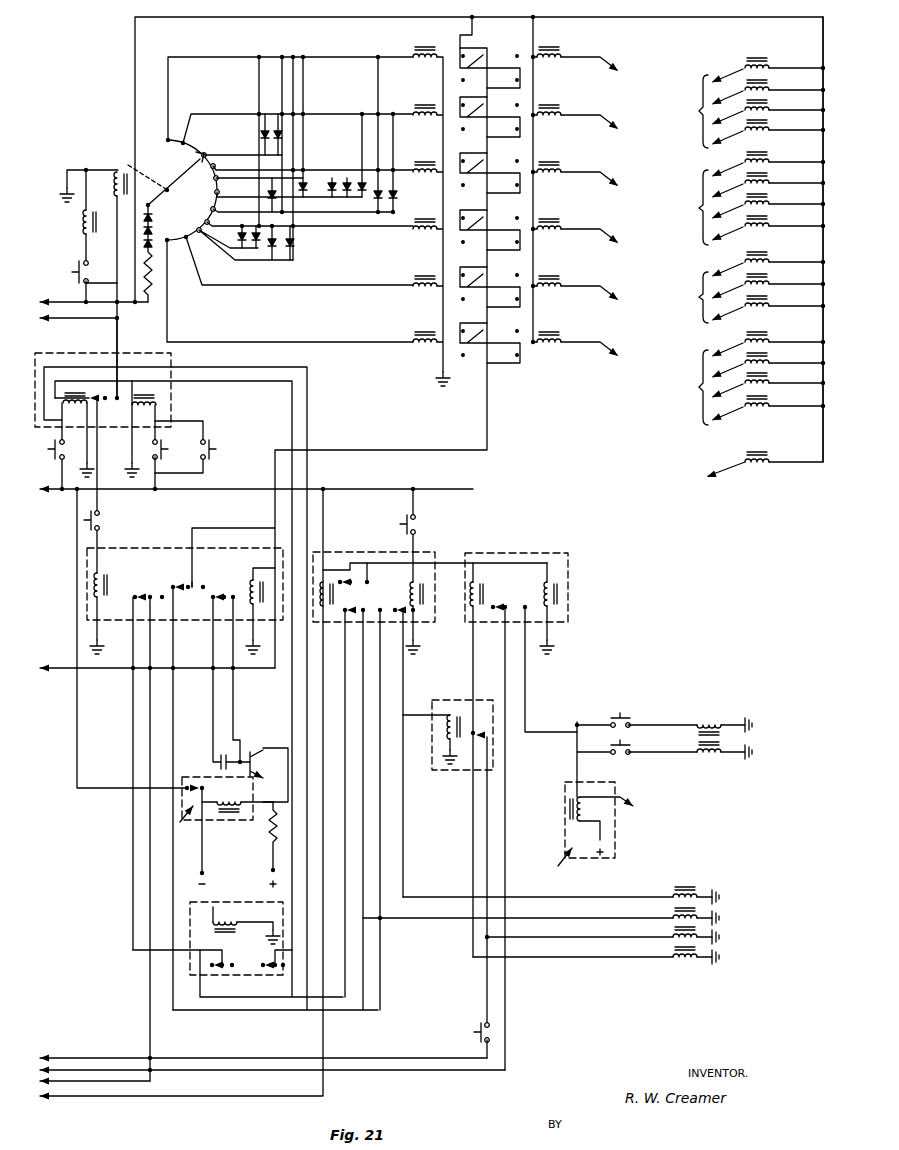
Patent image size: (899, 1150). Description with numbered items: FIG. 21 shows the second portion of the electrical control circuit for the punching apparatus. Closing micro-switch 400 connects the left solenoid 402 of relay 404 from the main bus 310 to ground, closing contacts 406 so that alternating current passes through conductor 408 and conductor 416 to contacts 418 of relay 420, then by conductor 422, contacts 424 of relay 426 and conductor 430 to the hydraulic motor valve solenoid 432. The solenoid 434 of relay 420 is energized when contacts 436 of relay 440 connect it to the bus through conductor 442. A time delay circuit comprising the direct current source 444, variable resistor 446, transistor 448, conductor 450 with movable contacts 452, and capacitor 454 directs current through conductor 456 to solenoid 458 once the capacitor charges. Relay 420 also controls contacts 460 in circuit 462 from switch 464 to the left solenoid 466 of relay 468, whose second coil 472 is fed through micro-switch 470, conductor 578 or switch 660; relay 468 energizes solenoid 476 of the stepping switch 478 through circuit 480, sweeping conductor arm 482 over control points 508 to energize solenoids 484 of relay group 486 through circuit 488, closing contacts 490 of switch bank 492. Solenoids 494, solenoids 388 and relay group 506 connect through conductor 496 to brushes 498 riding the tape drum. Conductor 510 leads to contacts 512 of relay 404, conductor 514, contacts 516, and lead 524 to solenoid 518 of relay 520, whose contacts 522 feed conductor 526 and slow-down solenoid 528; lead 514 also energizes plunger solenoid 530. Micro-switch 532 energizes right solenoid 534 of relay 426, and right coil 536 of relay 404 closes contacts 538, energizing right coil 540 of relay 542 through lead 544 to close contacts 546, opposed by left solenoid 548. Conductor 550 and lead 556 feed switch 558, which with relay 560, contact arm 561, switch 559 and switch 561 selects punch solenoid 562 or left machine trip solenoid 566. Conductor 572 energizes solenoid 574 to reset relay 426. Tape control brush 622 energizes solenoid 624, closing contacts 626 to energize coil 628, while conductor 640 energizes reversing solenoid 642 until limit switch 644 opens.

The main bus 310 is at (218, 490).
The solenoids 388 is at (770, 64).
The micro-switch 400 is at (102, 526).
The left solenoid of relay 404 402 is at (90, 593).
The relay 404 is at (169, 557).
The switch contacts 406 is at (146, 596).
The conductor 408 is at (148, 992).
The conductor 416 is at (132, 830).
The switch contacts 418 is at (230, 958).
The relay 420 is at (216, 910).
The conductor 422 is at (342, 996).
The switch contacts 424 is at (368, 608).
The relay 426 is at (354, 562).
The conductor 430 is at (408, 918).
The hydraulic motor valve solenoid 432 is at (672, 917).
The solenoid of relay 420 434 is at (240, 920).
The switch contacts 436 is at (199, 784).
The relay 440 is at (193, 823).
The conductor 442 is at (76, 752).
The direct current source 444 is at (206, 876).
The variable resistor 446 is at (268, 828).
The transistor 448 is at (251, 750).
The conductor 450 is at (235, 703).
The movable switch contacts 452 is at (212, 600).
The capacitor 454 is at (216, 754).
The conductor 456 is at (288, 748).
The solenoid of relay 440 458 is at (246, 802).
The switch contacts 460 is at (268, 960).
The circuit 462 is at (309, 410).
The micro-switch 464 is at (56, 461).
The left solenoid of relay 468 466 is at (80, 406).
The relay 468 is at (96, 356).
The micro-switch 470 is at (166, 449).
The second coil of relay 468 472 is at (154, 396).
The solenoid of stepping switch 476 is at (116, 182).
The stepping switch 478 is at (127, 164).
The circuit 480 is at (116, 283).
The conductor arm 482 is at (176, 178).
The solenoid of relay group 486 484 is at (412, 55).
The relay group 486 is at (396, 244).
The circuit 488 is at (68, 303).
The switch contacts 490 is at (470, 35).
The switch bank 492 is at (490, 368).
The solenoids 494 is at (562, 60).
The conductor 496 is at (635, 17).
The conducting brushes 498 is at (742, 68).
The relay group 506 is at (550, 350).
The control points 508 is at (168, 137).
The conductor 510 is at (487, 428).
The switch contacts 512 is at (188, 584).
The conductor 514 is at (176, 703).
The switch contacts 516 is at (408, 594).
The solenoid of relay 520 518 is at (452, 712).
The relay 520 is at (488, 690).
The contacts 522 is at (487, 734).
The lead 524 is at (404, 715).
The conductor 526 is at (472, 832).
The solenoid 528 is at (686, 958).
The solenoid 530 is at (698, 893).
The micro-switch 532 is at (407, 516).
The right solenoid of relay 426 534 is at (420, 582).
The right coil of relay 404 536 is at (250, 578).
The switch contacts 538 is at (358, 583).
The right coil of relay 542 540 is at (559, 584).
The relay 542 is at (504, 562).
The lead 544 is at (442, 562).
The switch contacts 546 is at (506, 606).
The left solenoid of relay 542 548 is at (492, 580).
The conductor 550 is at (526, 651).
The lead 556 is at (526, 700).
The switch 558 is at (572, 774).
The switch 559 is at (624, 720).
The relay 560 is at (551, 855).
The contact arm 561 is at (636, 748).
The punch solenoid 562 is at (714, 758).
The left machine trip solenoid 566 is at (712, 718).
The conductor 572 is at (132, 1096).
The solenoid of relay 426 574 is at (327, 578).
The conductor 578 is at (72, 676).
The tape control brush 622 is at (715, 474).
The solenoid 624 is at (770, 462).
The contacts 626 is at (77, 272).
The coil 628 is at (84, 226).
The conductor 640 is at (78, 1058).
The hydraulic motor reversing solenoid 642 is at (670, 937).
The limit switch 644 is at (476, 1040).
The switch 660 is at (215, 444).